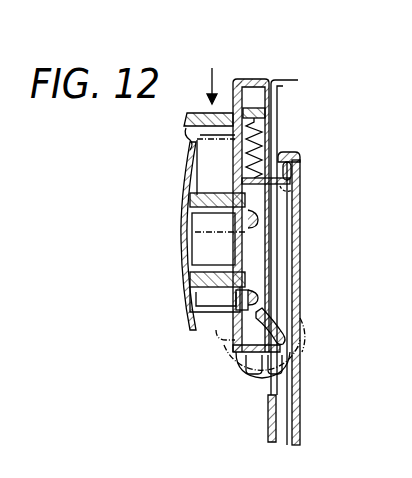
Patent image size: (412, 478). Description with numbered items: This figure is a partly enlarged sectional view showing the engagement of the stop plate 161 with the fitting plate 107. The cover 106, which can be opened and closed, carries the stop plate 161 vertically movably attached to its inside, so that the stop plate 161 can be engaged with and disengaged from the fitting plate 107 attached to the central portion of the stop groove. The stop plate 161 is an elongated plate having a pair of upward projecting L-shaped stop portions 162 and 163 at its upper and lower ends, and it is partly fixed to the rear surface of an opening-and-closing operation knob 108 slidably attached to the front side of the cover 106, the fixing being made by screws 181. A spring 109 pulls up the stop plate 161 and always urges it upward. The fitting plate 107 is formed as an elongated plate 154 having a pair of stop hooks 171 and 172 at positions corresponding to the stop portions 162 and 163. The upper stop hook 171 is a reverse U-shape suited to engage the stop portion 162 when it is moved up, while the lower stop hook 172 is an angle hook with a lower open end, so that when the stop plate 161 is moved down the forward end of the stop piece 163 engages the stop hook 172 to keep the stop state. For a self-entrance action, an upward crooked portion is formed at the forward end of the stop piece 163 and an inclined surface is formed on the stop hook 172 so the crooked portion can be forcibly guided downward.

The cover 106 is at (250, 80).
The plate 154 is at (299, 81).
The spring 109 is at (258, 134).
The upper stop hook 171 is at (290, 152).
The stop portion 162 is at (298, 182).
The fitting plate 107 is at (300, 240).
The screws 181 is at (262, 212).
The lower stop hook 172 is at (288, 333).
The opening-and-closing operation knob 108 is at (184, 192).
The stop plate 161 is at (240, 332).
The stop piece 163 is at (258, 373).